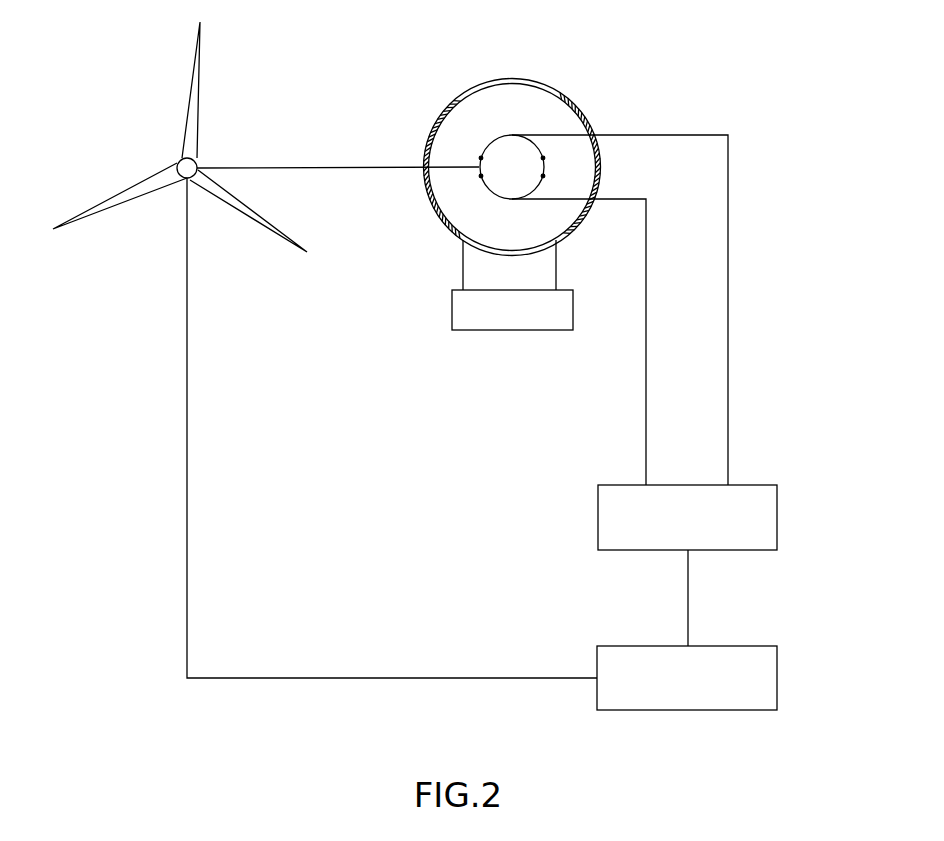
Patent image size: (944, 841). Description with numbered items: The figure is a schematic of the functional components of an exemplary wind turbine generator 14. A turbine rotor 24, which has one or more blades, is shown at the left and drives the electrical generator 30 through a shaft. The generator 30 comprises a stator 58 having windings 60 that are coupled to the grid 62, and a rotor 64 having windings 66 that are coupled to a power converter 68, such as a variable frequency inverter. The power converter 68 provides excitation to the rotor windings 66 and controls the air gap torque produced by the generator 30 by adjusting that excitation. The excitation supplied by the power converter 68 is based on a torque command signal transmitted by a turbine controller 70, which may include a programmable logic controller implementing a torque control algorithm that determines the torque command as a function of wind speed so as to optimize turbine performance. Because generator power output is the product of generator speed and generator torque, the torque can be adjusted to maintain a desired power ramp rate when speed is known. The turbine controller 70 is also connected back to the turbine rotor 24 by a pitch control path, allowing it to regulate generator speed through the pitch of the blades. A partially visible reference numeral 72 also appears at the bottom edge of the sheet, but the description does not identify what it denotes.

The wind turbine generator 14 is at (772, 38).
The turbine rotor 24 is at (156, 152).
The electrical generator 30 is at (473, 73).
The stator 58 is at (512, 80).
The stator windings 60 is at (585, 118).
The grid 62 is at (452, 310).
The rotor 64 is at (488, 143).
The rotor windings 66 is at (545, 158).
The power converter 68 is at (598, 518).
The turbine controller 70 is at (597, 662).
The component (partially shown) 72 is at (798, 837).